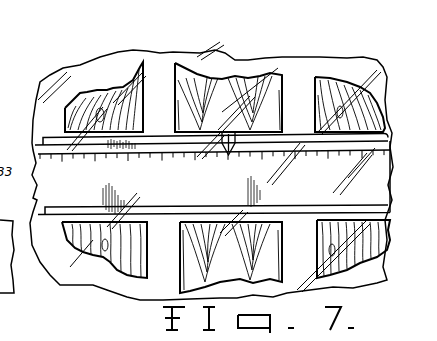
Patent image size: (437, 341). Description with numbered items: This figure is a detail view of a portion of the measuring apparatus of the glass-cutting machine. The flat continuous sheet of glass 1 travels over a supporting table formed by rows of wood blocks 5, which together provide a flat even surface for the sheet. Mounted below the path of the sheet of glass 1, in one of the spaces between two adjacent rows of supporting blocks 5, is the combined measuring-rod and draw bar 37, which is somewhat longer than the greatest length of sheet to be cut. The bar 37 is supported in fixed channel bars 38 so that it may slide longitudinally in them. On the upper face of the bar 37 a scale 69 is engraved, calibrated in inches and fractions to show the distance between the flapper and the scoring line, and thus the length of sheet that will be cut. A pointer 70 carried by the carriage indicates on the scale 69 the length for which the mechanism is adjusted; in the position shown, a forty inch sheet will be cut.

The sheet of glass 1 is at (200, 57).
The wood blocks 5 is at (130, 125).
The combined measuring-rod and draw bar 37 is at (50, 197).
The channel bars 38 is at (60, 140).
The scale 69 is at (246, 164).
The pointer 70 is at (224, 132).